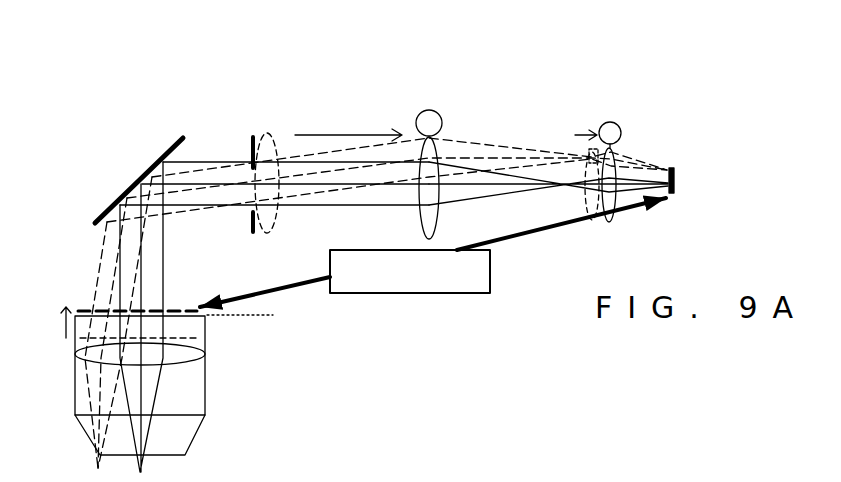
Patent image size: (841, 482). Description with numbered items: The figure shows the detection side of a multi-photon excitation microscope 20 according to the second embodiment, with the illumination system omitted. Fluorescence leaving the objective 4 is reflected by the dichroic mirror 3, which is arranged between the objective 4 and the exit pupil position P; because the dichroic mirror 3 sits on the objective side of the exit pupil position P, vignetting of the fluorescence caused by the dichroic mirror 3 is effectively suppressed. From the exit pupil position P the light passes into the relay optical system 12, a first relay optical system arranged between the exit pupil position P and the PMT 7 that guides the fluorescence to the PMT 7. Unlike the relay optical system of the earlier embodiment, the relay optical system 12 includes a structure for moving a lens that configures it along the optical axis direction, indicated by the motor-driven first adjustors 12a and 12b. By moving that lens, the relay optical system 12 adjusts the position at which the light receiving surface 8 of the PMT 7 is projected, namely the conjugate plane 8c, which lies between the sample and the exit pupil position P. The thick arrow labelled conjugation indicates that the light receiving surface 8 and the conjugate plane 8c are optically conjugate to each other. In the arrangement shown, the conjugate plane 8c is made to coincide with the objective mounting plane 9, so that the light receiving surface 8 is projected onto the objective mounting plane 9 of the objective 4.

The multi-photon excitation microscope 20 is at (761, 48).
The dichroic mirror 3 is at (168, 137).
The exit pupil position P is at (250, 140).
The relay optical system 12 is at (637, 110).
The first adjustor 12a is at (433, 110).
The first adjustor 12b is at (612, 122).
The light receiving surface 8 is at (662, 166).
The PMT 7 is at (675, 173).
The objective 4 is at (207, 407).
The conjugate plane 8c is at (80, 307).
The objective mounting plane 9 is at (243, 318).